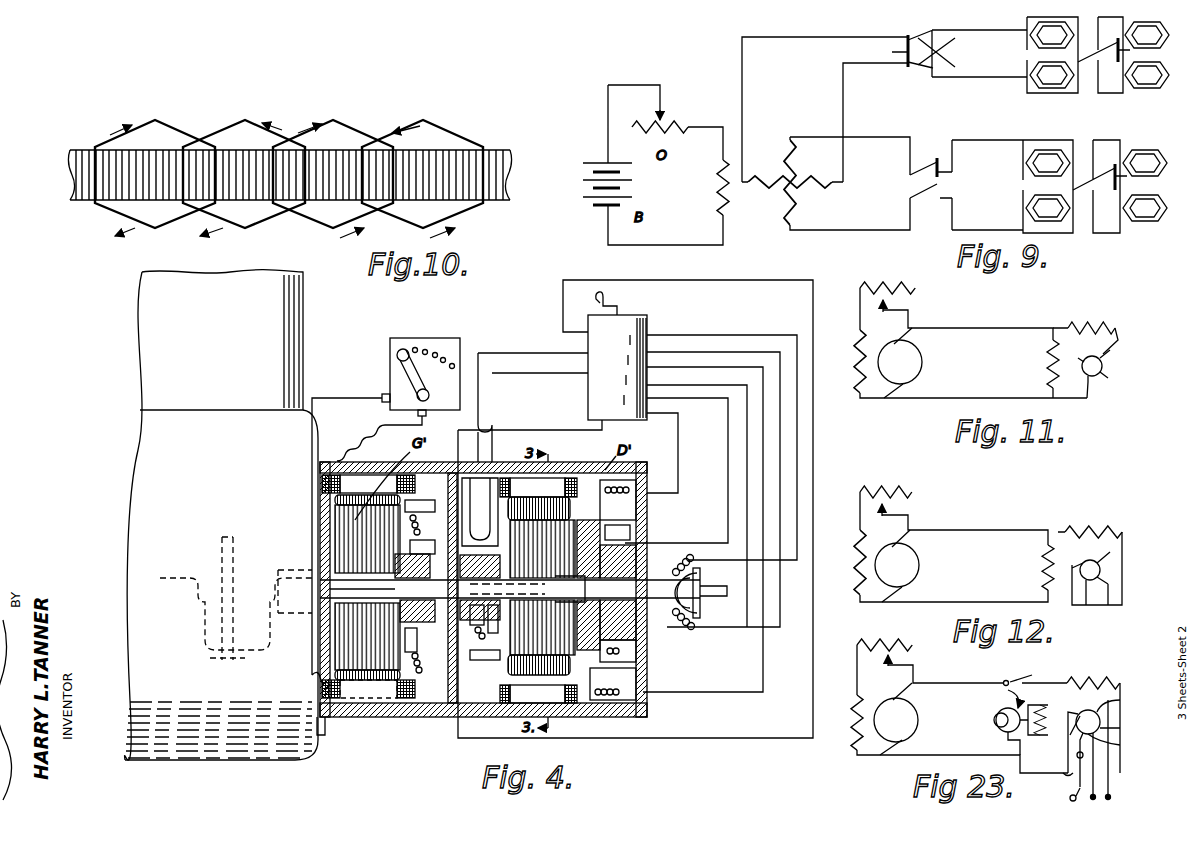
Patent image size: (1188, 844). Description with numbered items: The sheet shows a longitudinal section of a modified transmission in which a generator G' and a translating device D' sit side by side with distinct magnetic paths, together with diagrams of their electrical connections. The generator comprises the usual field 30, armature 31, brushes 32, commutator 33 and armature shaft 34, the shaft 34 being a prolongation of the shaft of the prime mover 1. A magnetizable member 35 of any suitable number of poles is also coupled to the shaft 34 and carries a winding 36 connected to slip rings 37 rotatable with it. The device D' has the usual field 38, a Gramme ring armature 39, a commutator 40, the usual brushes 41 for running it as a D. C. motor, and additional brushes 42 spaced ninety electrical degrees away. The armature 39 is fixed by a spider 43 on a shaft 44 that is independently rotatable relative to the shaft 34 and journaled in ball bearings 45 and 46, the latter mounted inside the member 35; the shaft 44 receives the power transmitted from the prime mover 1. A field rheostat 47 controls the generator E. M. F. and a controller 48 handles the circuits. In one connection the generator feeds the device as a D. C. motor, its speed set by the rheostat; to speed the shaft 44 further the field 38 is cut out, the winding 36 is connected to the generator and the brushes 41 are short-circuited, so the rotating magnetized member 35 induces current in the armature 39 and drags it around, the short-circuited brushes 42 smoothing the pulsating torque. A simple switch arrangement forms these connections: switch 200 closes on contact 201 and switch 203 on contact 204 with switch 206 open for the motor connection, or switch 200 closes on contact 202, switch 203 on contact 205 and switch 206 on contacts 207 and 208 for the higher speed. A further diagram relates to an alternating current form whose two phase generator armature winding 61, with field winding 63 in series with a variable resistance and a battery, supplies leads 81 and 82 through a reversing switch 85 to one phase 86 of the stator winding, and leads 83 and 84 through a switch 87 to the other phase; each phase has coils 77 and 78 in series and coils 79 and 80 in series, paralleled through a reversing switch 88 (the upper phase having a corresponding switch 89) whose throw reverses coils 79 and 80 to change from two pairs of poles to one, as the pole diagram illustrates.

In FIG. 4, the prime mover 1 is at (298, 352).
In FIG. 11, the field 30 is at (857, 366).
In FIG. 12, the field 30 is at (857, 572).
In FIG. 23, the field 30 is at (855, 728).
In FIG. 4, the field 30 is at (325, 488).
In FIG. 11, the armature 31 is at (900, 363).
In FIG. 12, the armature 31 is at (897, 566).
In FIG. 23, the armature 31 is at (896, 719).
In FIG. 4, the armature 31 is at (322, 508).
In FIG. 4, the brushes 32 is at (420, 504).
In FIG. 4, the commutator 33 is at (425, 542).
In FIG. 4, the armature shaft 34 is at (325, 580).
In FIG. 4, the member 35 is at (492, 635).
In FIG. 11, the winding 36 is at (1048, 362).
In FIG. 12, the winding 36 is at (1048, 562).
In FIG. 23, the winding 36 is at (1044, 712).
In FIG. 4, the winding 36 is at (500, 660).
In FIG. 23, the slip rings 37 is at (996, 722).
In FIG. 4, the slip rings 37 is at (486, 626).
In FIG. 11, the field 38 is at (1104, 326).
In FIG. 12, the field 38 is at (1089, 530).
In FIG. 23, the field 38 is at (1082, 683).
In FIG. 4, the field 38 is at (573, 470).
In FIG. 11, the armature 39 is at (1092, 366).
In FIG. 12, the armature 39 is at (1091, 578).
In FIG. 23, the armature 39 is at (1088, 748).
In FIG. 4, the armature 39 is at (497, 495).
In FIG. 4, the commutator 40 is at (618, 651).
In FIG. 11, the brushes 41 is at (1110, 350).
In FIG. 23, the brushes 41 is at (1115, 719).
In FIG. 4, the brushes 41 is at (605, 532).
In FIG. 11, the additional brushes 42 is at (1118, 378).
In FIG. 23, the additional brushes 42 is at (1052, 752).
In FIG. 4, the spider 43 is at (616, 500).
In FIG. 4, the shaft 44 is at (673, 612).
In FIG. 4, the ball bearing 45 is at (650, 572).
In FIG. 4, the ball bearing 46 is at (613, 683).
In FIG. 11, the field rheostat 47 is at (893, 287).
In FIG. 12, the field rheostat 47 is at (897, 482).
In FIG. 23, the field rheostat 47 is at (891, 645).
In FIG. 4, the field rheostat 47 is at (437, 343).
In FIG. 4, the controller 48 is at (650, 320).
In FIG. 9, the winding 61 is at (784, 192).
In FIG. 9, the winding 63 is at (718, 185).
In FIG. 10, the coil 77 is at (166, 128).
In FIG. 9, the coil 77 is at (1050, 150).
In FIG. 10, the coil 78 is at (437, 130).
In FIG. 9, the coil 78 is at (1030, 200).
In FIG. 10, the coil 79 is at (250, 126).
In FIG. 9, the coil 79 is at (1152, 152).
In FIG. 10, the coil 80 is at (343, 130).
In FIG. 9, the coil 80 is at (1155, 200).
In FIG. 9, the lead 81 is at (745, 112).
In FIG. 9, the lead 82 is at (845, 107).
In FIG. 9, the lead 83 is at (870, 137).
In FIG. 9, the lead 84 is at (848, 230).
In FIG. 9, the reversing switch 85 is at (905, 42).
In FIG. 9, the phase 86 is at (1140, 93).
In FIG. 9, the switch 87 is at (924, 196).
In FIG. 9, the reversing switch 88 is at (1100, 186).
In FIG. 9, the transistor 89 is at (1123, 55).
In FIG. 23, the switch 200 is at (1010, 673).
In FIG. 23, the contact 201 is at (1036, 673).
In FIG. 23, the contact 202 is at (1008, 692).
In FIG. 23, the switch 203 is at (1096, 757).
In FIG. 23, the contact 204 is at (1068, 776).
In FIG. 23, the contact 205 is at (1070, 798).
In FIG. 23, the switch 206 is at (1072, 802).
In FIG. 23, the contact 207 is at (1125, 792).
In FIG. 23, the contact 208 is at (1095, 800).